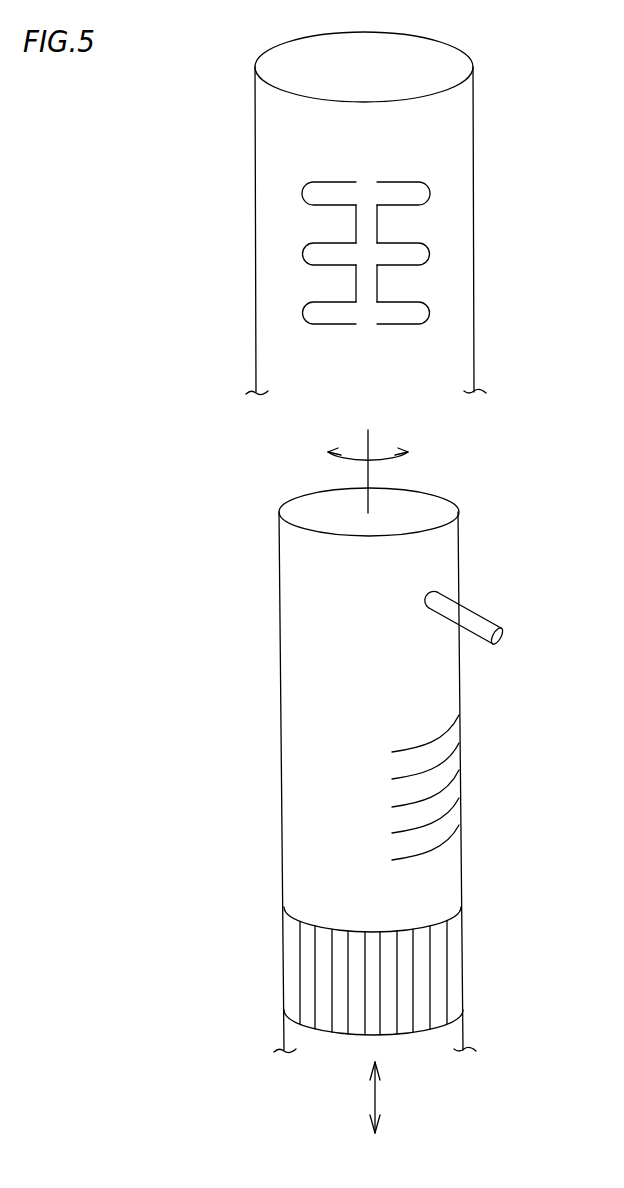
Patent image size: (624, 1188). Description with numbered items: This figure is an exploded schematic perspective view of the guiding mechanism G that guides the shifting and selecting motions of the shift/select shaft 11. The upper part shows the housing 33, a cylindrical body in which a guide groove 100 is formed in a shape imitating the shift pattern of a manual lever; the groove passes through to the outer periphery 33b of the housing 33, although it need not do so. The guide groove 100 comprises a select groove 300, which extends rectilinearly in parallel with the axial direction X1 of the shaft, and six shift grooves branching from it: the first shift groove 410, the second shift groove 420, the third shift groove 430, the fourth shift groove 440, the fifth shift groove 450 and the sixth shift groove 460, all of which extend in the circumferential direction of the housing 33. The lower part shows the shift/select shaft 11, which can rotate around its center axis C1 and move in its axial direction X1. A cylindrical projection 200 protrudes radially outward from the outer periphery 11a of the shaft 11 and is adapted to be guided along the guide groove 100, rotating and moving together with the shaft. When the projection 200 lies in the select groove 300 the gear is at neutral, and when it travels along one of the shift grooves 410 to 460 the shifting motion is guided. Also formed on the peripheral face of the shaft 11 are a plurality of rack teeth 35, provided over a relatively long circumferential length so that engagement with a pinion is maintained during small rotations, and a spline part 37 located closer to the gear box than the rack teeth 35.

The housing 33 is at (477, 106).
The outer periphery of housing 33b is at (448, 139).
The guiding mechanism G is at (500, 226).
The sixth shift groove 460 is at (315, 188).
The first shift groove 410 is at (419, 188).
The guide groove 100 is at (358, 230).
The third shift groove 430 is at (315, 251).
The second shift groove 420 is at (419, 251).
The select groove 300 is at (352, 288).
The fifth shift groove 450 is at (315, 310).
The fourth shift groove 440 is at (419, 310).
The center axis C1 is at (368, 440).
The shift/select shaft 11 is at (460, 547).
The outer periphery of shift/select shaft 11a is at (306, 582).
The projection 200 is at (487, 623).
The rack teeth 35 is at (440, 817).
The spline part 37 is at (450, 948).
The axial direction X1 is at (377, 1098).